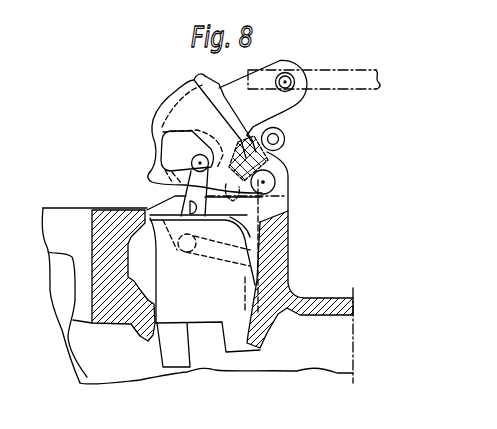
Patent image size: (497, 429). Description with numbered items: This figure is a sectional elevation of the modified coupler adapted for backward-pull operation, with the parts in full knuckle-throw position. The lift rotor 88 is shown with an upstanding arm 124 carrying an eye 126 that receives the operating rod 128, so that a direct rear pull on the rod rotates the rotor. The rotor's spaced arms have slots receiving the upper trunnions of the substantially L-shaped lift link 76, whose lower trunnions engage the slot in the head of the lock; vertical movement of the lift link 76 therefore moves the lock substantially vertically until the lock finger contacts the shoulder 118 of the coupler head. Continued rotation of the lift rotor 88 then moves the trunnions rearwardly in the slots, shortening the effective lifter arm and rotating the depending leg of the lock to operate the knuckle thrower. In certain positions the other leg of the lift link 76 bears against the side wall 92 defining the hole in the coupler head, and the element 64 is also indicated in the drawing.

The block 64 is at (231, 290).
The lift link 76 is at (183, 188).
The lift rotor 88 is at (185, 106).
The side wall 92 is at (266, 339).
The shoulder 118 is at (122, 292).
The upstanding arm 124 is at (295, 105).
The eye 126 is at (285, 60).
The operating rod 128 is at (345, 76).